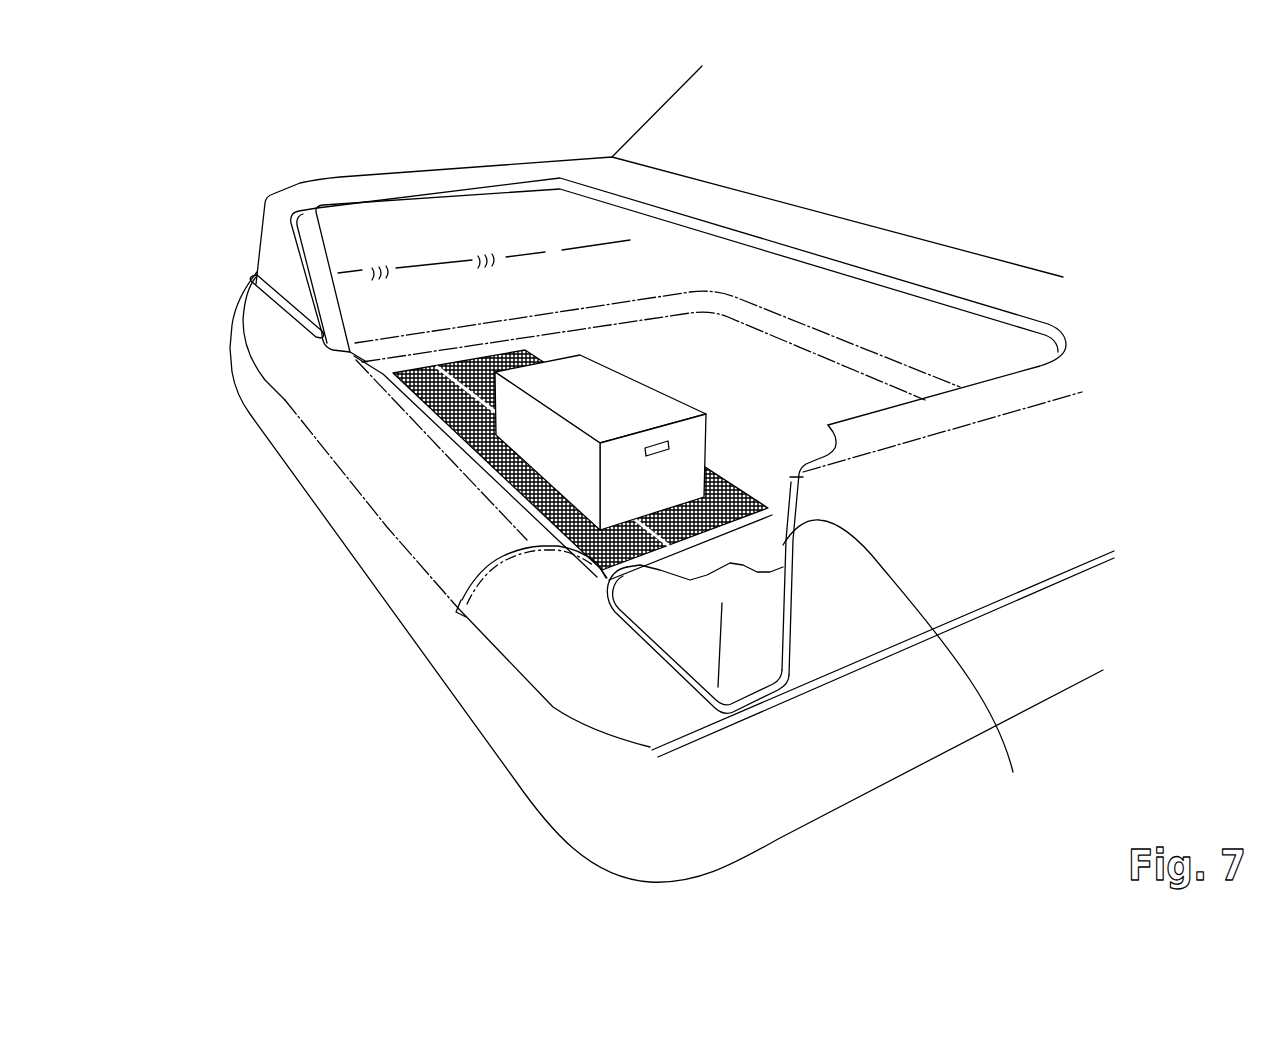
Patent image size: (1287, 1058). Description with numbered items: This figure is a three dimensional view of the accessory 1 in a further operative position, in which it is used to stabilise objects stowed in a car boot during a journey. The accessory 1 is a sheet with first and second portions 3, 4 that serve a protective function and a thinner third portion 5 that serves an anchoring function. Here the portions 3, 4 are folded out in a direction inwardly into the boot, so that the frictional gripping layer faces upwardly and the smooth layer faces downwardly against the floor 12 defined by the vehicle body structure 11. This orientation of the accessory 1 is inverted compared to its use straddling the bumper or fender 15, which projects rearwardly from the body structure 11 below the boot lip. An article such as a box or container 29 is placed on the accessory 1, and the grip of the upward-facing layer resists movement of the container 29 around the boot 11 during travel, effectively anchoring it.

The accessory 1 is at (447, 366).
The first portion 3 is at (754, 522).
The second portion 4 is at (663, 550).
The third portion 5 is at (607, 578).
The vehicle body structure 11 is at (453, 241).
The floor 12 is at (911, 665).
The bumper or fender 15 is at (540, 640).
The box or container 29 is at (568, 352).